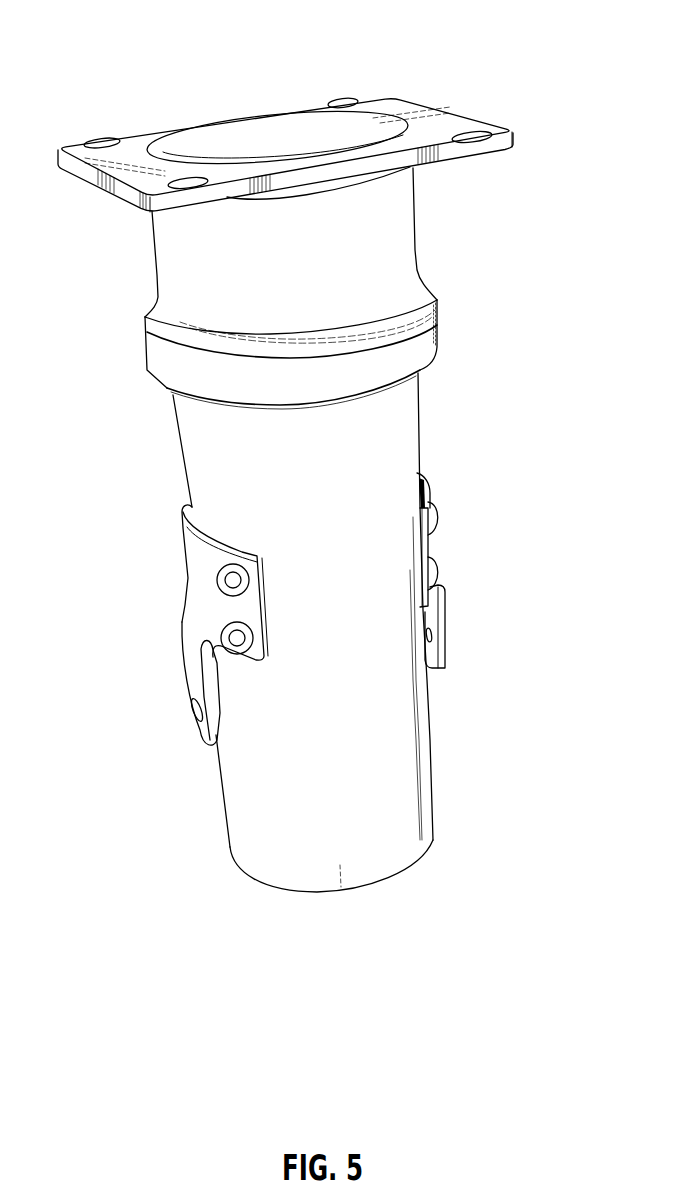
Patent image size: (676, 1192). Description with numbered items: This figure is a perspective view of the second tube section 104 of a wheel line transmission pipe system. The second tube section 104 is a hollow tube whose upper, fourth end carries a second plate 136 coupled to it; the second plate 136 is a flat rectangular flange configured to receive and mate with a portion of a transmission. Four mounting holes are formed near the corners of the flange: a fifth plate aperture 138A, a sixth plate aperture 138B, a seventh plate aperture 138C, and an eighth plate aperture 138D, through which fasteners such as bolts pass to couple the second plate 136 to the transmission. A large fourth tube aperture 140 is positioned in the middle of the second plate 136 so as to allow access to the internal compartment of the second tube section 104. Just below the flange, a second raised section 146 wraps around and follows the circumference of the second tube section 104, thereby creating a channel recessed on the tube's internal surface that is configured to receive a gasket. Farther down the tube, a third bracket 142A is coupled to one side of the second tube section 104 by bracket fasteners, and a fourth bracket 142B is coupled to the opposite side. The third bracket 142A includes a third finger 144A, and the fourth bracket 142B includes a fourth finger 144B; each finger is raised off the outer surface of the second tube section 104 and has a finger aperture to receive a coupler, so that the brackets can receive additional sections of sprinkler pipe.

The second tube section 104 is at (203, 262).
The second plate 136 is at (423, 138).
The fifth plate aperture 138A is at (103, 138).
The sixth plate aperture 138B is at (196, 176).
The seventh plate aperture 138C is at (472, 132).
The eighth plate aperture 138D is at (344, 98).
The fourth tube aperture 140 is at (254, 132).
The third bracket 142A is at (205, 582).
The fourth bracket 142B is at (424, 542).
The third finger 144A is at (195, 686).
The fourth finger 144B is at (433, 653).
The second raised section 146 is at (423, 347).